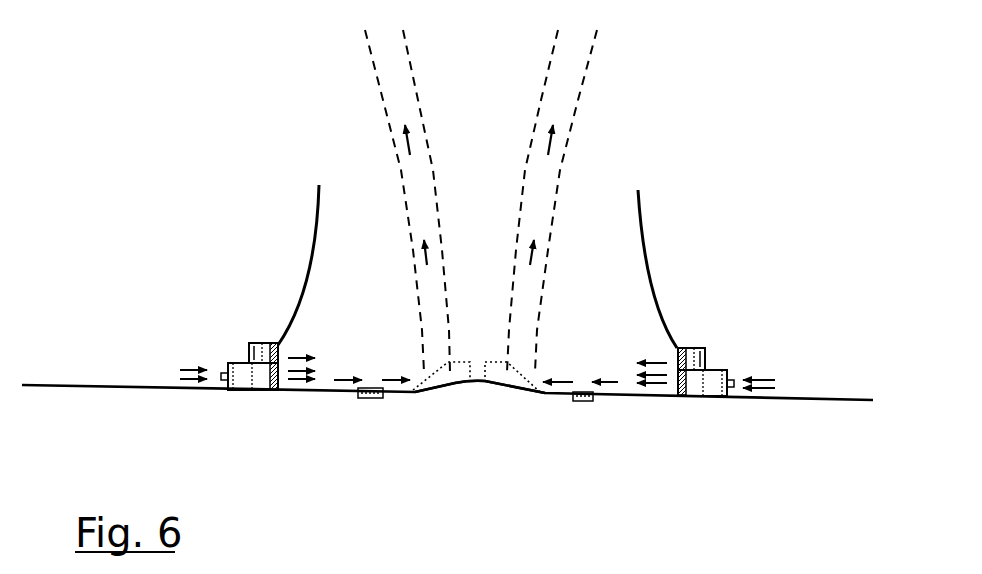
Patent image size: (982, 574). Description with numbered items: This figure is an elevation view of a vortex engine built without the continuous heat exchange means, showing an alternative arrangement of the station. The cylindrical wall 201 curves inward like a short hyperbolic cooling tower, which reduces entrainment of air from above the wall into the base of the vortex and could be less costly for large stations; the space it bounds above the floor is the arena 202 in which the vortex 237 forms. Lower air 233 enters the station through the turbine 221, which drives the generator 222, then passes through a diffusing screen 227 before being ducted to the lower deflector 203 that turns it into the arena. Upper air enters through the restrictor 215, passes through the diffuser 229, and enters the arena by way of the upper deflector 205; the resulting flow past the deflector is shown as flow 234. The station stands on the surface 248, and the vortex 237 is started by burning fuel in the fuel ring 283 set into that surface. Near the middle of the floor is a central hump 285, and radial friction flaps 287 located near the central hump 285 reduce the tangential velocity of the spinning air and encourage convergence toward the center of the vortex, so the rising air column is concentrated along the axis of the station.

The cylindrical wall 201 is at (655, 273).
The flow channel 202 is at (620, 258).
The lower deflector 203 is at (277, 393).
The upper deflector 205 is at (280, 350).
The restrictor 215 is at (245, 353).
The turbine 221 is at (230, 393).
The generator 222 is at (222, 380).
The diffusing screen 227 is at (258, 392).
The diffuser 229 is at (260, 340).
The lower air 233 is at (180, 363).
The fluid flow through valve 234 is at (300, 355).
The vortex 237 is at (368, 63).
The substrate surface 248 is at (770, 402).
The fuel ring 283 is at (370, 402).
The central hump 285 is at (458, 388).
The radial friction flaps 287 is at (522, 372).